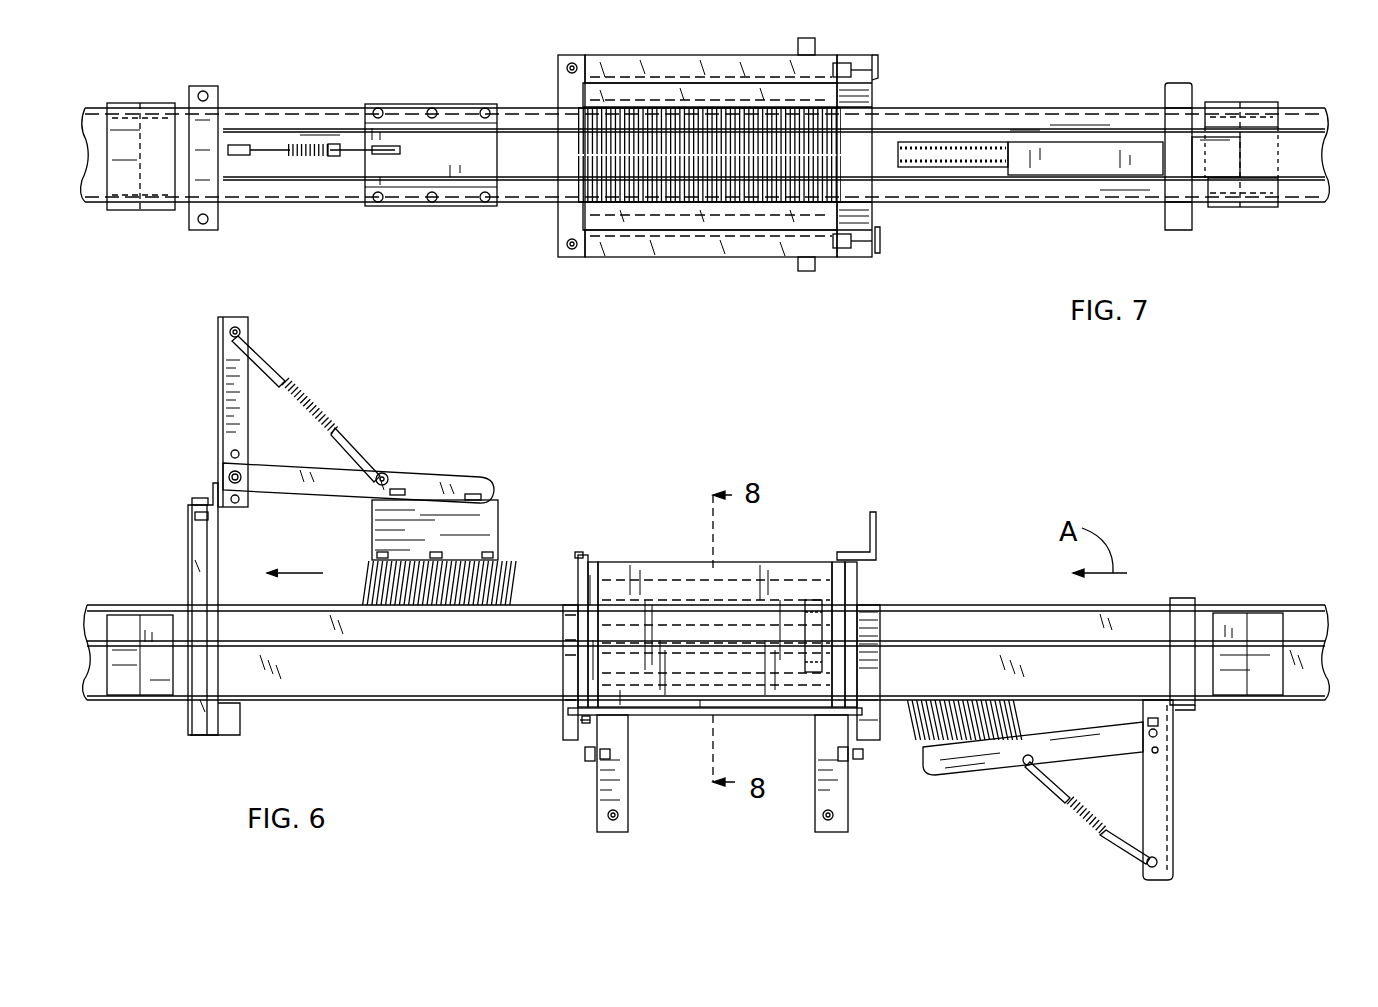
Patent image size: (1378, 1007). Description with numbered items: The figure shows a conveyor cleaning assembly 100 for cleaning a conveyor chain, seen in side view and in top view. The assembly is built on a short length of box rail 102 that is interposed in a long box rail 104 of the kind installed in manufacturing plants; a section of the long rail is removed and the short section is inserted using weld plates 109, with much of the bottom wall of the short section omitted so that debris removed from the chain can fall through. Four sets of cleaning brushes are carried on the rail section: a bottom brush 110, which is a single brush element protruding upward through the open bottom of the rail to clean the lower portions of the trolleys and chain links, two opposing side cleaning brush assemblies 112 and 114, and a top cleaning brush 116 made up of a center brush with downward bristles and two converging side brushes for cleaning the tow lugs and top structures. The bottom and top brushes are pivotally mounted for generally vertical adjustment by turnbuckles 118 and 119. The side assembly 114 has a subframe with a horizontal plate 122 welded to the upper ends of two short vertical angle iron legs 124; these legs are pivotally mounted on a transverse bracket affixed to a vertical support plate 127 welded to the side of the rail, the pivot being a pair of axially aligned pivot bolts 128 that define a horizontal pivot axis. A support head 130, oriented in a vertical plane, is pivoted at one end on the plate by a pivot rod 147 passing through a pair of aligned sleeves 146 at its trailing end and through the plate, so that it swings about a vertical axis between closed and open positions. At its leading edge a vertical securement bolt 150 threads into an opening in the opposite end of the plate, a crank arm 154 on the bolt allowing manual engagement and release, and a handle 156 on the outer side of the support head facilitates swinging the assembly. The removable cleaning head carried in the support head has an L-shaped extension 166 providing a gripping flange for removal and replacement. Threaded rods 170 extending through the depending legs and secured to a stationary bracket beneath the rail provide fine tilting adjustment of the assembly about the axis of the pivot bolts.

In FIG. 7, the conveyor cleaning assembly 100 is at (1150, 55).
In FIG. 6, the conveyor cleaning assembly 100 is at (915, 540).
In FIG. 6, the box rail 102 is at (1150, 603).
In FIG. 7, the long box rail 104 is at (92, 110).
In FIG. 6, the long box rail 104 is at (90, 605).
In FIG. 7, the weld plates 109 is at (150, 100).
In FIG. 6, the weld plates 109 is at (155, 690).
In FIG. 7, the bottom brush 110 is at (960, 157).
In FIG. 7, the side cleaning brush assembly 112 is at (616, 44).
In FIG. 7, the side cleaning brush assembly 114 is at (603, 258).
In FIG. 7, the top cleaning brush 116 is at (405, 128).
In FIG. 6, the top cleaning brush 116 is at (500, 525).
In FIG. 6, the turnbuckle 118 is at (1100, 820).
In FIG. 7, the turnbuckle 119 is at (305, 152).
In FIG. 6, the turnbuckle 119 is at (305, 392).
In FIG. 6, the horizontal plate 122 is at (700, 716).
In FIG. 6, the vertical angle iron legs 124 is at (597, 815).
In FIG. 7, the vertical support plate 127 is at (568, 100).
In FIG. 6, the vertical support plate 127 is at (563, 675).
In FIG. 6, the pivot bolts 128 is at (585, 755).
In FIG. 7, the support head 130 is at (695, 258).
In FIG. 6, the sleeves 146 is at (575, 588).
In FIG. 7, the pivot rod 147 is at (560, 240).
In FIG. 6, the pivot rod 147 is at (580, 556).
In FIG. 7, the securement bolt 150 is at (850, 250).
In FIG. 7, the crank arm 154 is at (880, 245).
In FIG. 6, the crank arm 154 is at (880, 518).
In FIG. 7, the handle 156 is at (806, 272).
In FIG. 6, the handle 156 is at (812, 615).
In FIG. 6, the L-shaped extension 166 is at (900, 630).
In FIG. 6, the threaded rods 170 is at (620, 815).